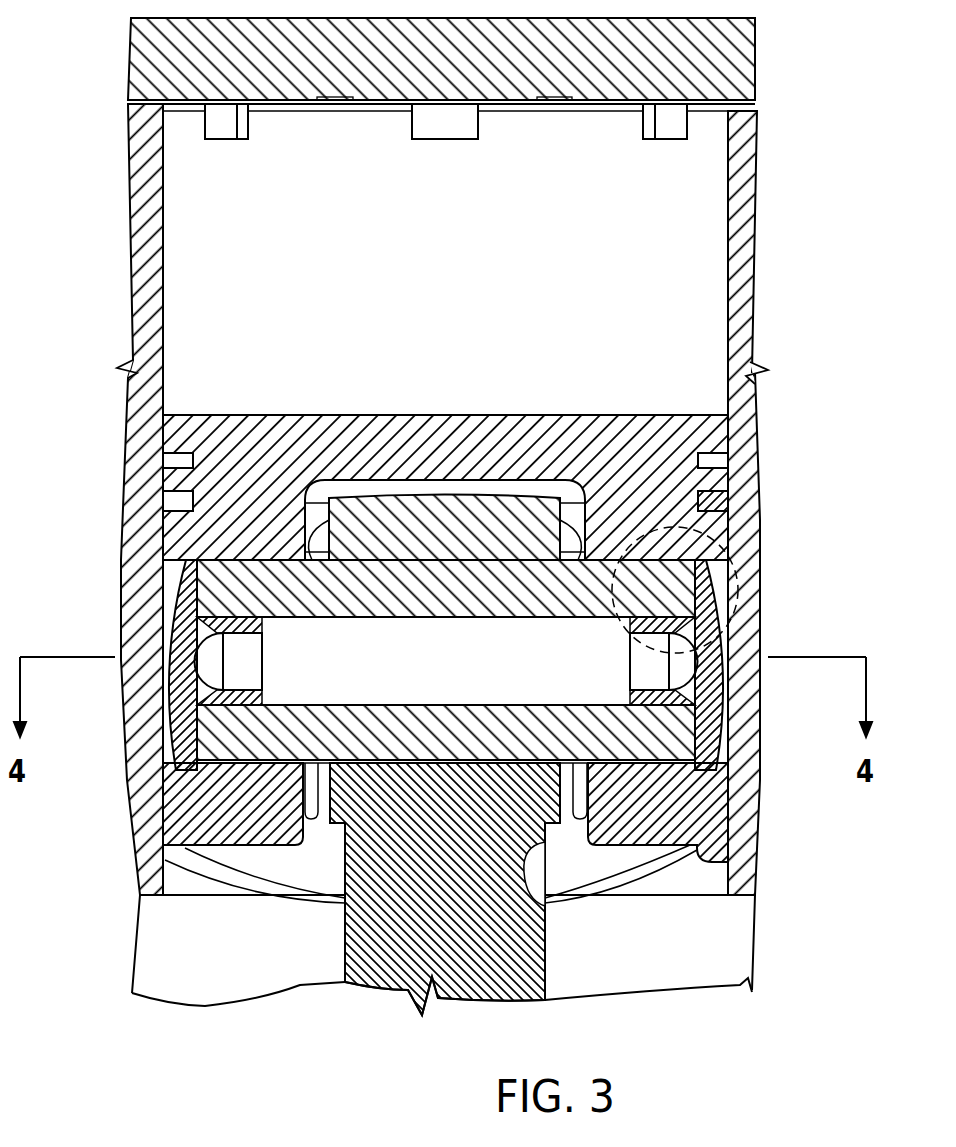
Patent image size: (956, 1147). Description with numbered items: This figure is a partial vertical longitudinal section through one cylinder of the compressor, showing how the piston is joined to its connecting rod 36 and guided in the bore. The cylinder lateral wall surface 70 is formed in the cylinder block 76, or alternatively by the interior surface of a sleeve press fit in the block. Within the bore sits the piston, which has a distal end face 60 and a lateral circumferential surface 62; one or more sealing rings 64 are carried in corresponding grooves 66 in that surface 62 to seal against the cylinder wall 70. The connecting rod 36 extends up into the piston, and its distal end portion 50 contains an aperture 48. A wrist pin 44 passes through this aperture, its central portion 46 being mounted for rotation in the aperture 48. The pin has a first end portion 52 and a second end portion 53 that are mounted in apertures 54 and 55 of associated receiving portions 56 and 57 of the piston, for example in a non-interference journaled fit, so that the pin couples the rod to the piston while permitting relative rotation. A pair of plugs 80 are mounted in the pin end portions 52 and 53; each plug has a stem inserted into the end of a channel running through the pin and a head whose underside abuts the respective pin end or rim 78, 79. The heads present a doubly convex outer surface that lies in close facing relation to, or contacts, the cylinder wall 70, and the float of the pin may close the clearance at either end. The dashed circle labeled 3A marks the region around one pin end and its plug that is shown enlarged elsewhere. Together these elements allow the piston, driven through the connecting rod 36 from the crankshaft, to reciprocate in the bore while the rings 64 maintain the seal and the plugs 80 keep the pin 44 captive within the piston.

The cylinder block 76 is at (104, 237).
The cylinder lateral wall surface 70 is at (752, 190).
The distal end face 60 is at (245, 415).
The grooves 66 is at (722, 461).
The sealing rings 64 is at (727, 497).
The aperture 55 is at (300, 560).
The aperture 54 is at (607, 567).
The wrist pin 44 is at (446, 508).
The central portion 46 is at (447, 580).
The aperture 48 is at (412, 752).
The second end portion 53 is at (273, 598).
The pin end 79 is at (188, 590).
The plugs 80 is at (167, 691).
The pin end 78 is at (697, 720).
The detail region 3A is at (757, 597).
The first end portion 52 is at (655, 765).
The lateral/circumferential surface 62 is at (163, 810).
The receiving portion 56 is at (638, 808).
The distal end portion 50 is at (365, 790).
The connecting rod 36 is at (412, 960).
The receiving portion 57 is at (163, 888).